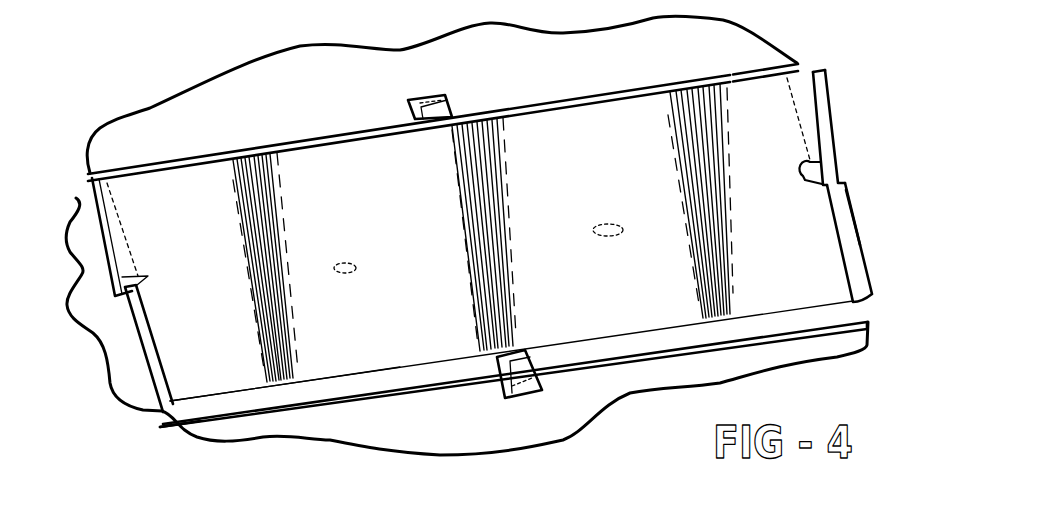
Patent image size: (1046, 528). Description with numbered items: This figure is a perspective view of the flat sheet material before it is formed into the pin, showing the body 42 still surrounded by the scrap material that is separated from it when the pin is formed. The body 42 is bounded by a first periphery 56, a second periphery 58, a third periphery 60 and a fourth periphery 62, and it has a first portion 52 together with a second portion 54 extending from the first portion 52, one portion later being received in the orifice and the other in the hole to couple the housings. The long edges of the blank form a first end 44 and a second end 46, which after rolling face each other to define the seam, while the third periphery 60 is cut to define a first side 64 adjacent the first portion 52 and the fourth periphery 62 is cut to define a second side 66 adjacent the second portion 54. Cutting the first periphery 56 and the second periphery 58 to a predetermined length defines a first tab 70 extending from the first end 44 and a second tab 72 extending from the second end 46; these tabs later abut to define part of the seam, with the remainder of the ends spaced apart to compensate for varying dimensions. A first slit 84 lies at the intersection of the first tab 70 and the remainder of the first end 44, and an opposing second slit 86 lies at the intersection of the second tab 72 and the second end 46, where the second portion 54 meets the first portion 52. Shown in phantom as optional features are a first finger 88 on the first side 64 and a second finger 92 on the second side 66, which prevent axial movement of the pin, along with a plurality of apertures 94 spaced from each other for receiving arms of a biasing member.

The body 42 is at (780, 290).
The first end 44 is at (828, 68).
The second end 46 is at (147, 344).
The first portion 52 is at (150, 193).
The second portion 54 is at (197, 377).
The first periphery 56 is at (848, 207).
The second periphery 58 is at (74, 197).
The third periphery 60 is at (220, 148).
The fourth periphery 62 is at (347, 405).
The first side 64 is at (730, 80).
The second side 66 is at (268, 392).
The first tab 70 is at (827, 85).
The second tab 72 is at (113, 238).
The first slit 84 is at (822, 150).
The second slit 86 is at (140, 278).
The first finger 88 is at (462, 95).
The second finger 92 is at (540, 375).
The apertures 94 is at (347, 262).